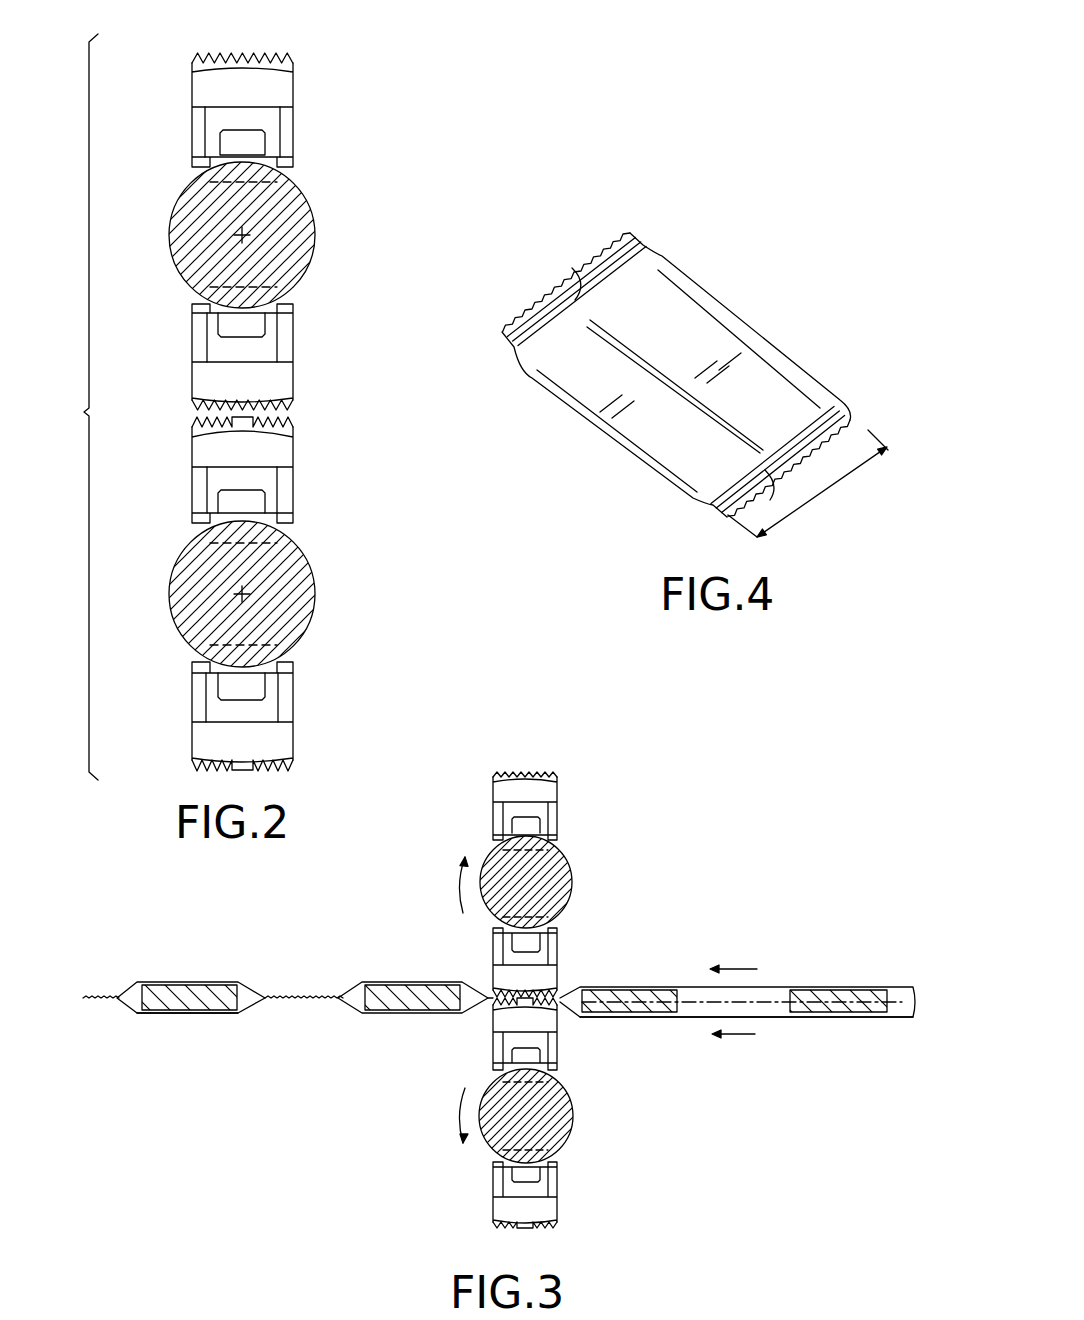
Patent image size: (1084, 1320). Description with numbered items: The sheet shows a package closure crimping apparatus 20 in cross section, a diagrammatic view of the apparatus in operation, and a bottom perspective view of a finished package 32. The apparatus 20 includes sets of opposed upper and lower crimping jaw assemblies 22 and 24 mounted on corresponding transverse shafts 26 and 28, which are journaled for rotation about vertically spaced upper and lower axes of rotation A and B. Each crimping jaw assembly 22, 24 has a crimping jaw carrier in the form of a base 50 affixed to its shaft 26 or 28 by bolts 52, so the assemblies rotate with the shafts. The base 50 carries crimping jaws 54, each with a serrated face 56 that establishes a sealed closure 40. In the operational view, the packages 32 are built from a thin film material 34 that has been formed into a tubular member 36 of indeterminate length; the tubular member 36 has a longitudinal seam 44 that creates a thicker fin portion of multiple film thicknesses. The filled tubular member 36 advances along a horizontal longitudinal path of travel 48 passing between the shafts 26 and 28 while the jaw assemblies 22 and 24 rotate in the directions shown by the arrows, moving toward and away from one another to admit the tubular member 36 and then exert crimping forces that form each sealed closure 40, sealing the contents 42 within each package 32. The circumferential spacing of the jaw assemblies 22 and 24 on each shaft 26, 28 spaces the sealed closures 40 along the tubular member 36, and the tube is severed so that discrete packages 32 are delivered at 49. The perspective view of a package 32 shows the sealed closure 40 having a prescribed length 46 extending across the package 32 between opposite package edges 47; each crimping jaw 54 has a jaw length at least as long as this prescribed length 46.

In FIG. 2, the package closure crimping apparatus 20 is at (190, 378).
In FIG. 3, the package closure crimping apparatus 20 is at (483, 986).
In FIG. 2, the upper crimping jaw assembly 22 is at (280, 85).
In FIG. 3, the upper crimping jaw assembly 22 is at (558, 985).
In FIG. 2, the lower crimping jaw assembly 24 is at (273, 450).
In FIG. 3, the lower crimping jaw assembly 24 is at (557, 1025).
In FIG. 2, the upper transverse shaft 26 is at (297, 205).
In FIG. 3, the upper transverse shaft 26 is at (565, 875).
In FIG. 2, the lower transverse shaft 28 is at (300, 610).
In FIG. 3, the lower transverse shaft 28 is at (563, 1127).
In FIG. 3, the package 32 is at (188, 977).
In FIG. 4, the package 32 is at (641, 465).
In FIG. 3, the thin film material 34 is at (897, 987).
In FIG. 3, the tubular member 36 is at (822, 990).
In FIG. 3, the sealed closure 40 is at (100, 996).
In FIG. 4, the sealed closure 40 is at (517, 343).
In FIG. 3, the contents 42 is at (167, 997).
In FIG. 3, the longitudinal seam 44 is at (700, 1017).
In FIG. 4, the longitudinal seam 44 is at (613, 353).
In FIG. 4, the prescribed length 46 is at (823, 493).
In FIG. 4, the package edges 47 is at (718, 505).
In FIG. 3, the horizontal longitudinal path of travel 48 is at (763, 1003).
In FIG. 3, the delivery location 49 is at (190, 1030).
In FIG. 2, the base 50 is at (198, 322).
In FIG. 2, the bolts 52 is at (230, 325).
In FIG. 2, the crimping jaw 54 is at (255, 372).
In FIG. 2, the serrated face 56 is at (270, 55).
In FIG. 2, the upper axis of rotation A is at (240, 233).
In FIG. 2, the lower axis of rotation B is at (240, 597).